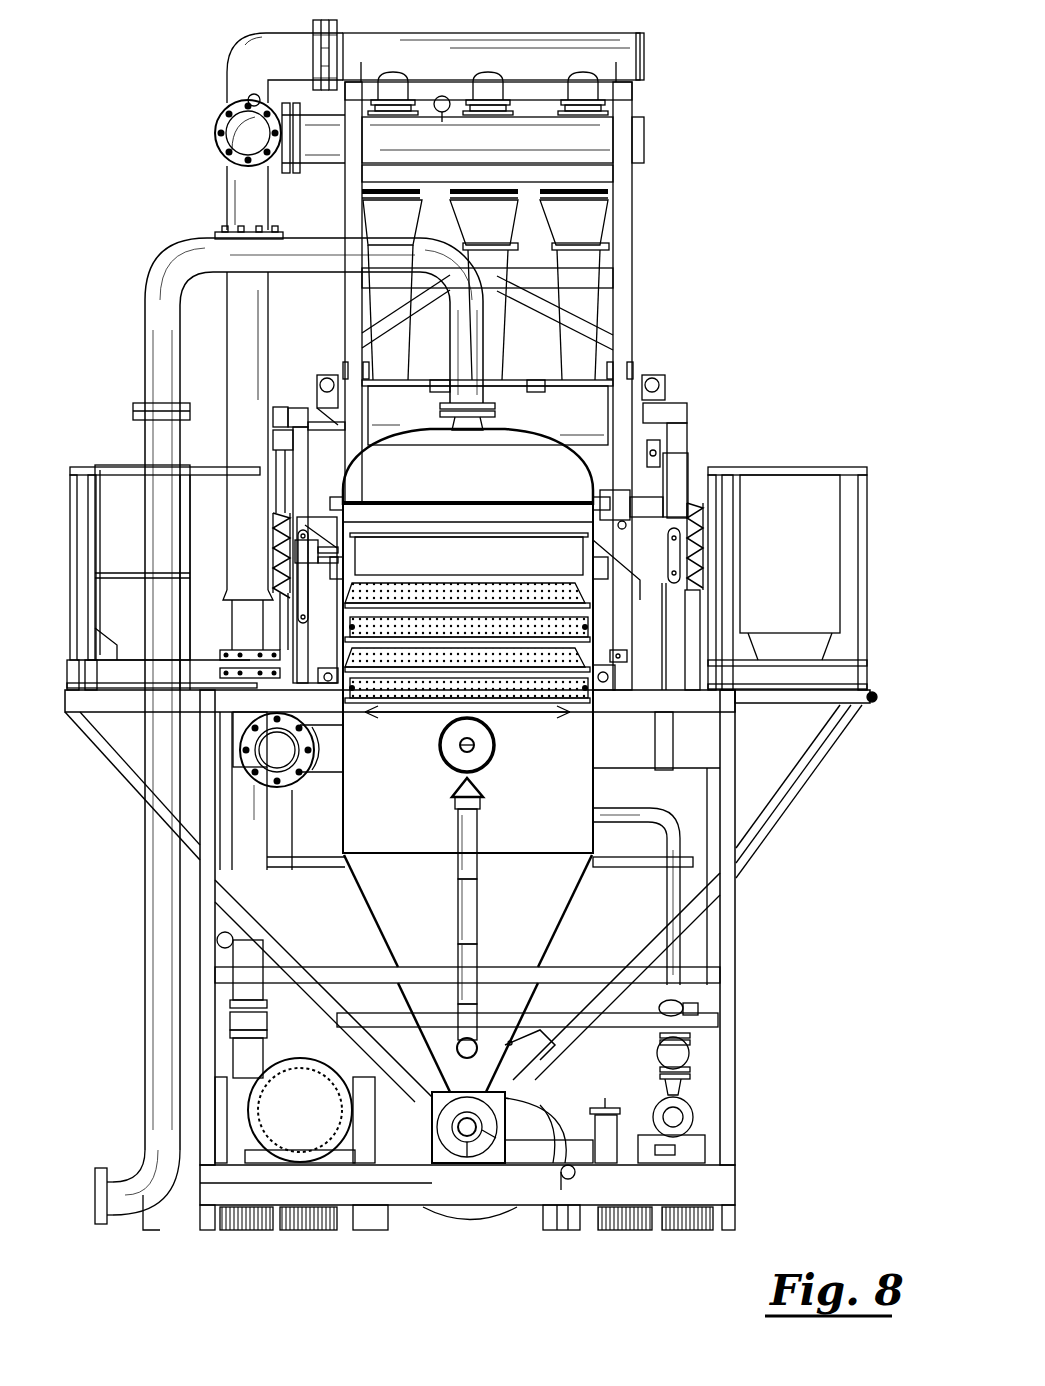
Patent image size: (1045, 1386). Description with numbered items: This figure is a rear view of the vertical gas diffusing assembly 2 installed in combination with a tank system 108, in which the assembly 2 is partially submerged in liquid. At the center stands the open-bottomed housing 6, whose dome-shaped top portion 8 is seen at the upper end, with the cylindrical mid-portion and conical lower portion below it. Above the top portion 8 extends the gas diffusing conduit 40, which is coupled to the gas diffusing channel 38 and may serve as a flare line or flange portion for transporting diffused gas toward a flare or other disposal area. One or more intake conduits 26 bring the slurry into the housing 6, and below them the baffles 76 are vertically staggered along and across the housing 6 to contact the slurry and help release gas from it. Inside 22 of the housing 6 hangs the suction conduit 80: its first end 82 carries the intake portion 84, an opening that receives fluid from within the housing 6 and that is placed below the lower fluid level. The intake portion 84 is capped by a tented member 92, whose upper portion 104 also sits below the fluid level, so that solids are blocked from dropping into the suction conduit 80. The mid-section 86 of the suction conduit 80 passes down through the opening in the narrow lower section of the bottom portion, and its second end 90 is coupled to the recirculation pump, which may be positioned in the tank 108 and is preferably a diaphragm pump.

The vertical gas diffusing assembly 2 is at (572, 424).
The open-bottomed housing 6 is at (593, 752).
The top portion 8 is at (543, 433).
The inside of the housing 22 is at (565, 830).
The intake conduits 26 is at (300, 552).
The gas diffusing channel 38 is at (495, 378).
The gas diffusing conduit 40 is at (465, 330).
The baffles 76 is at (582, 627).
The suction conduit 80 is at (467, 912).
The first end 82 is at (460, 836).
The intake portion 84 is at (473, 788).
The mid-section 86 is at (467, 960).
The second end 90 is at (460, 1030).
The tented member 92 is at (457, 790).
The upper portion 104 is at (480, 790).
The tank system 108 is at (757, 1085).